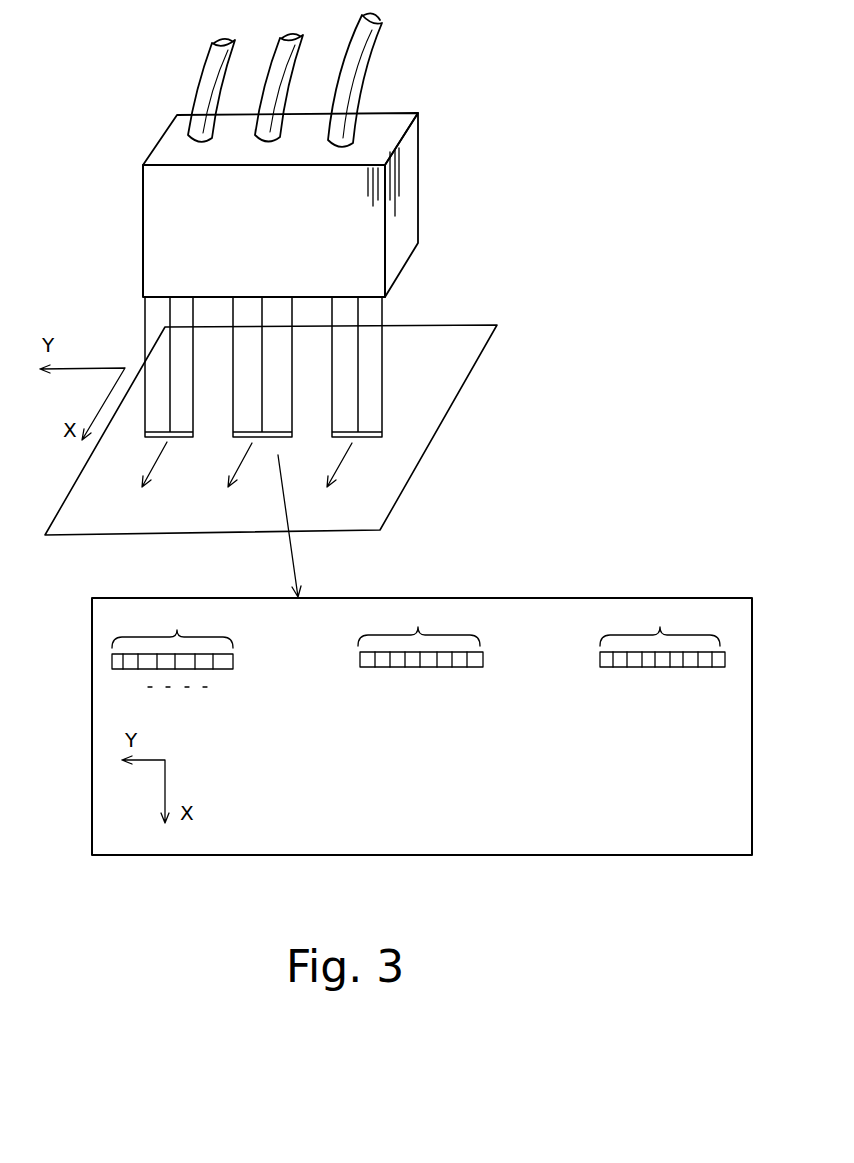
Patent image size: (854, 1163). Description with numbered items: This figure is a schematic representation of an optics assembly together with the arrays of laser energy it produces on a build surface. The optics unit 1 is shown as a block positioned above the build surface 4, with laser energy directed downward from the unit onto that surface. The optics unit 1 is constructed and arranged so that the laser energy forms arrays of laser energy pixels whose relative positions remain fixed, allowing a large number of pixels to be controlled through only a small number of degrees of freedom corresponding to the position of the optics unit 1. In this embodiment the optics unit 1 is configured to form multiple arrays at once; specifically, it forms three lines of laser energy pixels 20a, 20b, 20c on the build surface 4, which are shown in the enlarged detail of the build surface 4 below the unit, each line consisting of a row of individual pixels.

The optics unit 1 is at (417, 167).
The build surface 4 is at (409, 454).
The first line of laser energy pixels 20a is at (213, 709).
The second line of laser energy pixels 20b is at (447, 694).
The third line of laser energy pixels 20c is at (670, 702).